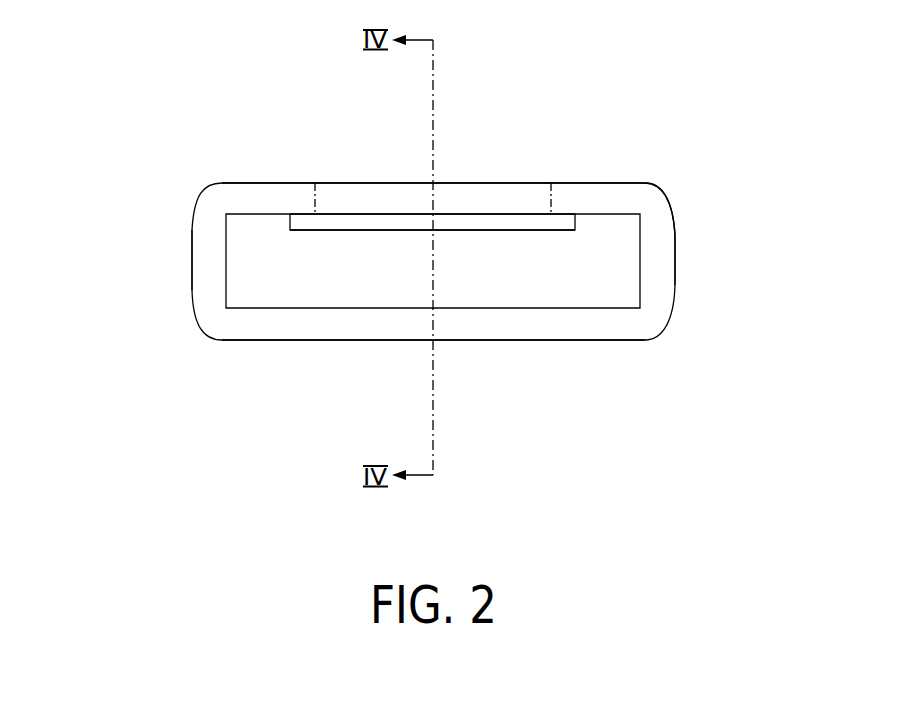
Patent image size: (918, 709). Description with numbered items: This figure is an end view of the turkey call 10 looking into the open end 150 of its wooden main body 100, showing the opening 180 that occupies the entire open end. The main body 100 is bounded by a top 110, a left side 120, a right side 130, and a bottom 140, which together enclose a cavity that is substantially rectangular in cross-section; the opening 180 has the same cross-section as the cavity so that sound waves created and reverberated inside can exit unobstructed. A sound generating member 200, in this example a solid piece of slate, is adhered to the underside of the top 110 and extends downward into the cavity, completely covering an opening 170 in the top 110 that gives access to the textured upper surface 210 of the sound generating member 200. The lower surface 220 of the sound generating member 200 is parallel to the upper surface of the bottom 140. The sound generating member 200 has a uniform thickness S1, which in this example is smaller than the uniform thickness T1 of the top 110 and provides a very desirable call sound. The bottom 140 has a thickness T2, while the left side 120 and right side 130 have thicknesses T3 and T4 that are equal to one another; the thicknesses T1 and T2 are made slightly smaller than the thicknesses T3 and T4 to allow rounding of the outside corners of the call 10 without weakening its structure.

The turkey call 10 is at (712, 168).
The main body 100 is at (660, 258).
The top 110 is at (238, 183).
The left side 120 is at (192, 272).
The right side 130 is at (675, 280).
The bottom 140 is at (583, 340).
The open end 150 is at (643, 198).
The opening 170 is at (352, 183).
The opening 180 is at (253, 262).
The sound generating member 200 is at (408, 220).
The upper surface 210 is at (381, 214).
The lower surface 220 is at (357, 232).
The thickness S1 is at (484, 268).
The thickness T1 is at (608, 252).
The thickness T2 is at (542, 268).
The thickness T3 is at (236, 383).
The thickness T4 is at (602, 383).